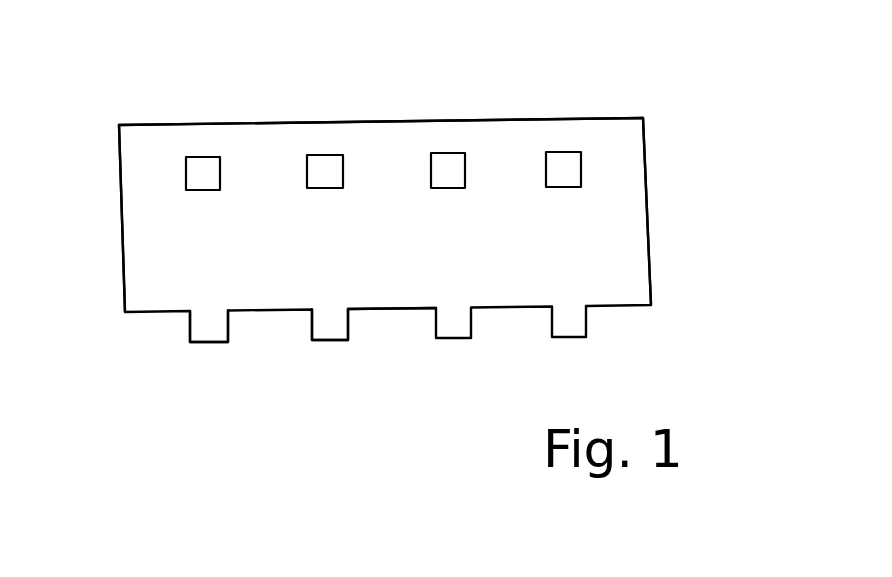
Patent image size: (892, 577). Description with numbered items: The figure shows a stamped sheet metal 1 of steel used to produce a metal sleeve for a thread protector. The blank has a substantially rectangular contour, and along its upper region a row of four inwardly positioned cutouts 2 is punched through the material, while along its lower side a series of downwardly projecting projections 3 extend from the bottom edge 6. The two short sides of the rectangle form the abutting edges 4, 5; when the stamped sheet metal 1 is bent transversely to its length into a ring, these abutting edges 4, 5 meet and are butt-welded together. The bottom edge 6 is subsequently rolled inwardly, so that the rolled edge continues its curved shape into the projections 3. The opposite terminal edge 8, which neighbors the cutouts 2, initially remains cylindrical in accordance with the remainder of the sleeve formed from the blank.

The stamped sheet metal 1 is at (420, 260).
The cutouts 2 is at (323, 170).
The projections 3 is at (327, 322).
The abutting edge 4 is at (665, 220).
The abutting edge 5 is at (105, 277).
The bottom edge 6 is at (384, 322).
The terminal edge 8 is at (359, 111).